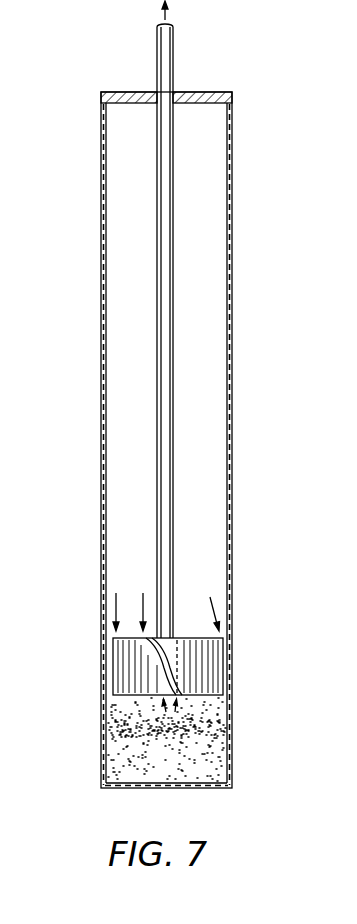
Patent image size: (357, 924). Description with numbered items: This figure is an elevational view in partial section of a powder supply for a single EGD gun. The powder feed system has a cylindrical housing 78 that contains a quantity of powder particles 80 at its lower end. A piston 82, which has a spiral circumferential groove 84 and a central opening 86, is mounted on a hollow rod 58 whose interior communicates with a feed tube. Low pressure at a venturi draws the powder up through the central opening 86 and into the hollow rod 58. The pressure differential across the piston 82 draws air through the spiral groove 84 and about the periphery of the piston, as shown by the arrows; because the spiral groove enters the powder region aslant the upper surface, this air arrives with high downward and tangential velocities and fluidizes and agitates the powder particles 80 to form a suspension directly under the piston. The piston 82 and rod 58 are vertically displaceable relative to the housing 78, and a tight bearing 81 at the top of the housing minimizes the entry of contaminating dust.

The cylindrical housing 78 is at (101, 277).
The tight bearing 81 is at (178, 97).
The hollow rod 58 is at (158, 228).
The piston 82 is at (221, 667).
The spiral circumferential groove 84 is at (148, 640).
The central opening 86 is at (188, 640).
The powder particles 80 is at (208, 746).